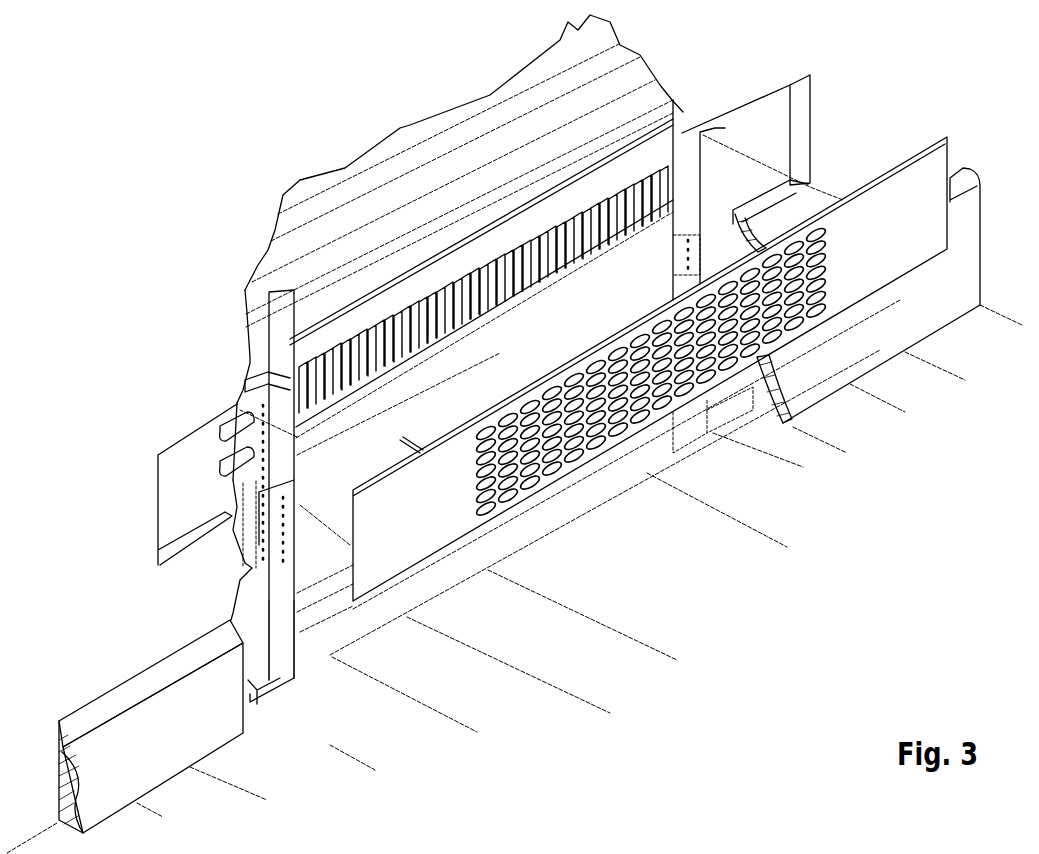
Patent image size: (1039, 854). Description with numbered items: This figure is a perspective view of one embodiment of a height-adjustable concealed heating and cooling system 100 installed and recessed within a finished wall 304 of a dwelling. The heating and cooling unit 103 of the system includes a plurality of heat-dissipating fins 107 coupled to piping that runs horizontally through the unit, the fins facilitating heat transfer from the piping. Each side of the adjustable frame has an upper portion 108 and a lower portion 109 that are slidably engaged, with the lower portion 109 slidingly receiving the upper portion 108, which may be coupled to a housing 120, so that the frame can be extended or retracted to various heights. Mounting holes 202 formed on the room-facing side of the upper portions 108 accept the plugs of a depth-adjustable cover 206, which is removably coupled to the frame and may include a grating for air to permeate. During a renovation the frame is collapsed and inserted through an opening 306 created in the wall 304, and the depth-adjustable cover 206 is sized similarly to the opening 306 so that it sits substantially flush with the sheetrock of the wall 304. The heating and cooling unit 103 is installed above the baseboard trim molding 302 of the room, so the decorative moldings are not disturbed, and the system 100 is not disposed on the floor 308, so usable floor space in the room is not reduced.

The heating and cooling system 100 is at (142, 236).
The heating and cooling unit 103 is at (775, 124).
The heat-dissipating fins 107 is at (490, 270).
The upper portion 108 is at (275, 318).
The lower portion 109 is at (280, 650).
The housing 120 is at (410, 287).
The mounting holes 202 is at (688, 128).
The depth-adjustable cover 206 is at (437, 530).
The baseboard trim molding 302 is at (130, 740).
The wall 304 is at (200, 613).
The opening 306 is at (183, 541).
The floor 308 is at (213, 813).